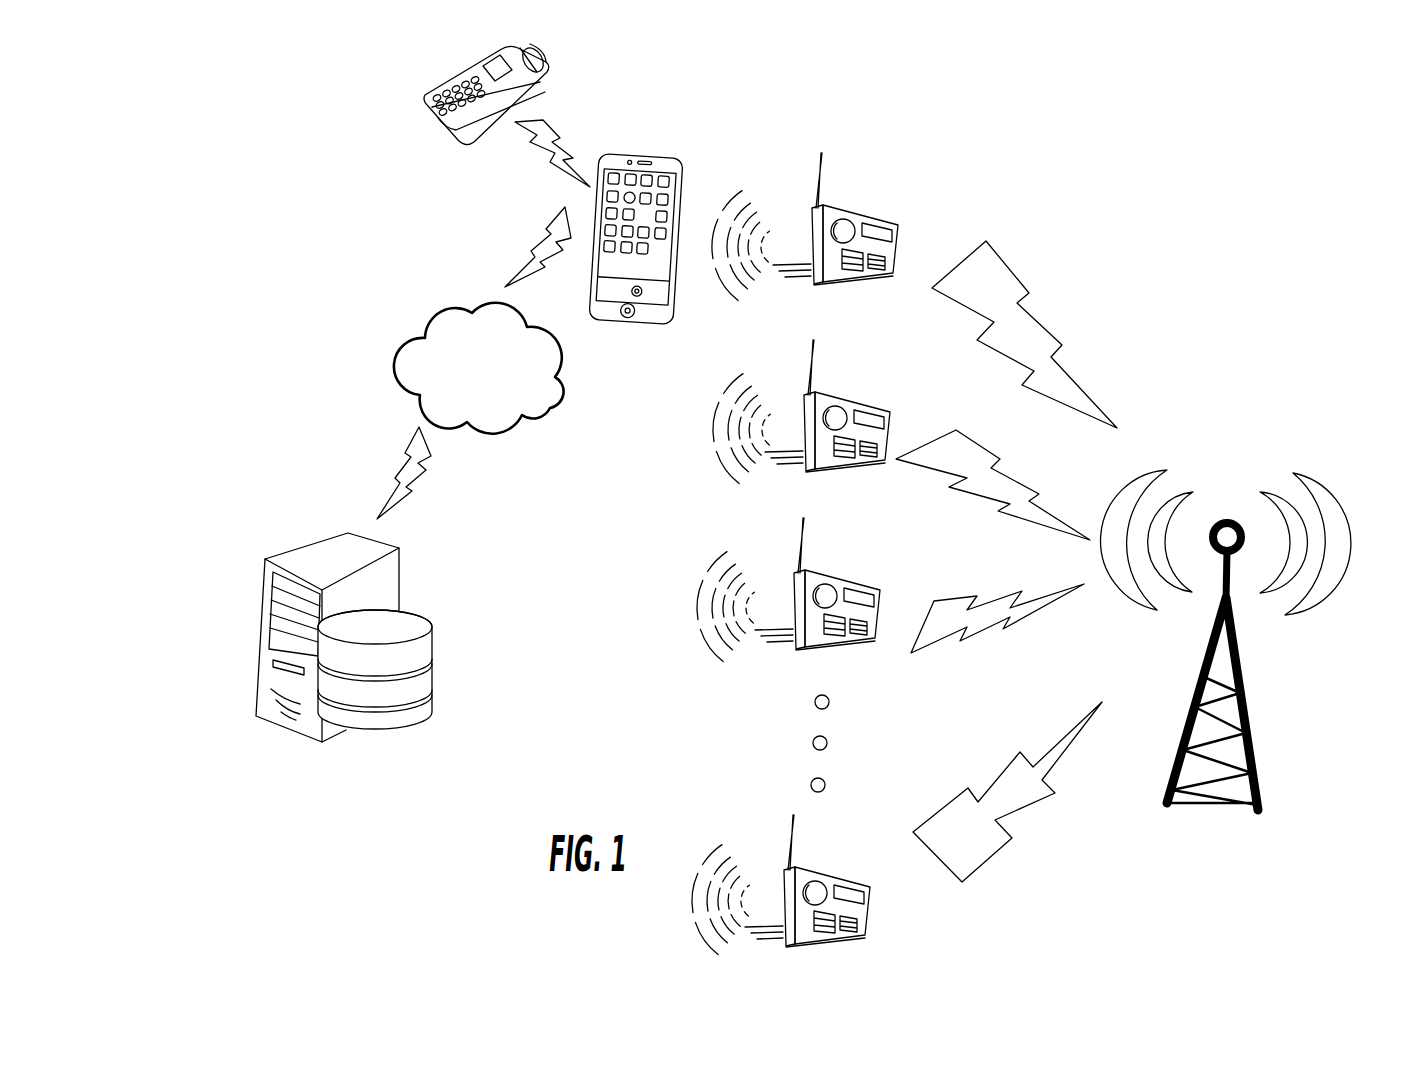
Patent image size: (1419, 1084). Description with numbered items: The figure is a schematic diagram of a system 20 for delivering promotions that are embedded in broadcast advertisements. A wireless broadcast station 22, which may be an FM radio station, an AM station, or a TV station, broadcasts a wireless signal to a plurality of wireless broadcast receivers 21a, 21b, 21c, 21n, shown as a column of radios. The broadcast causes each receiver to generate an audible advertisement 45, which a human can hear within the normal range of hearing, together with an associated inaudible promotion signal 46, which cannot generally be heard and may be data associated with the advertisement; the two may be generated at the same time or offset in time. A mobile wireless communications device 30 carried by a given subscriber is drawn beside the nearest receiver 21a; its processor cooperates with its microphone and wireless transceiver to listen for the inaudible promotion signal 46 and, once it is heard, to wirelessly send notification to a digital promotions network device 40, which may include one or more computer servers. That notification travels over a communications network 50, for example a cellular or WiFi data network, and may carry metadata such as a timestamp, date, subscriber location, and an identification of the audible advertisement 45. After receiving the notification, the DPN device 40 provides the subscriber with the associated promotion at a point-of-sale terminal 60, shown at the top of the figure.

The system 20 is at (184, 170).
The wireless broadcast receiver 21a is at (838, 208).
The wireless broadcast receiver 21b is at (832, 395).
The wireless broadcast receiver 21c is at (822, 573).
The wireless broadcast receiver 21n is at (812, 870).
The wireless broadcast station 22 is at (1258, 765).
The mobile wireless communications device 30 is at (642, 155).
The digital promotions network (DPN) device 40 is at (276, 560).
The audible advertisement 45 is at (745, 192).
The inaudible promotion signal 46 is at (720, 213).
The communications network 50 is at (402, 352).
The point-of-sale (POS) terminal 60 is at (428, 85).